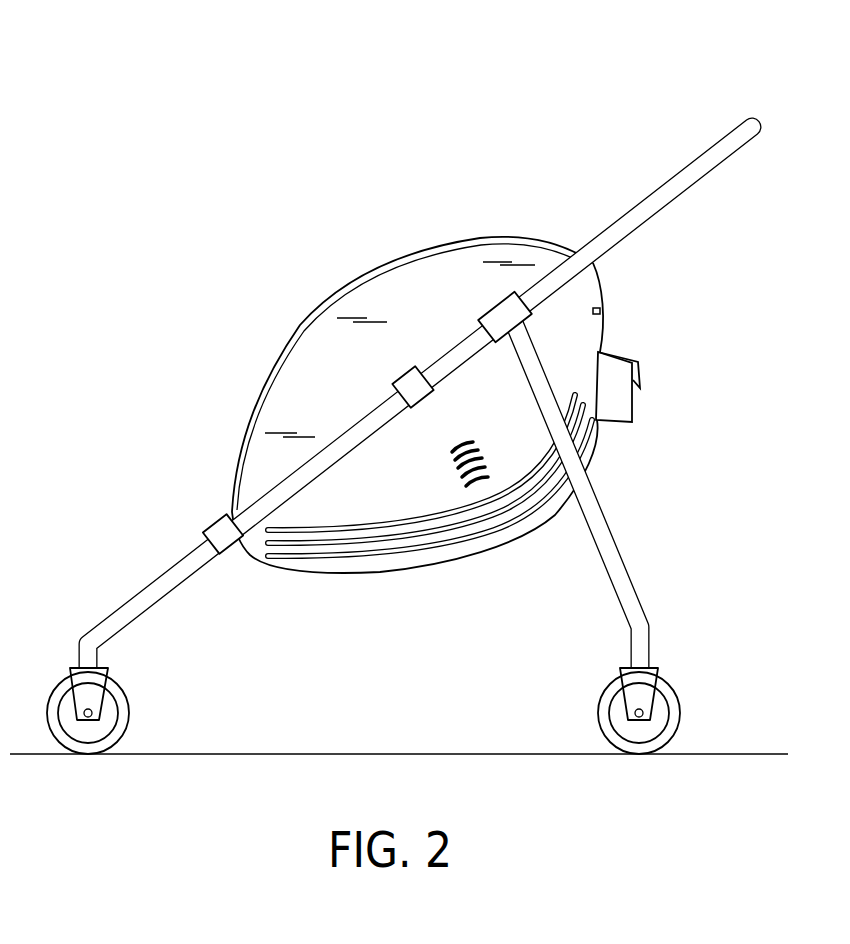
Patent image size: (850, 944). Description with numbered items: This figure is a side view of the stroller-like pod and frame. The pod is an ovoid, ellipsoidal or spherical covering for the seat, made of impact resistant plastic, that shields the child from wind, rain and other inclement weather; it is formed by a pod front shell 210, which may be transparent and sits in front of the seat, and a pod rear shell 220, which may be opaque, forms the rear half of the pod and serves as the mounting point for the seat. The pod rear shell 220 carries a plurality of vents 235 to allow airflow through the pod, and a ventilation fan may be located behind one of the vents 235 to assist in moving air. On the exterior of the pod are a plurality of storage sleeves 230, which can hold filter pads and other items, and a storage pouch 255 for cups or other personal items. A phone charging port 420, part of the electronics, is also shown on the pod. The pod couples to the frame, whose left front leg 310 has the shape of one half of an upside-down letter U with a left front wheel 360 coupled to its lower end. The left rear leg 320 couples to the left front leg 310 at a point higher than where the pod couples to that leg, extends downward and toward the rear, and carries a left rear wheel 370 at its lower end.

The pod front shell 210 is at (352, 285).
The pod rear shell 220 is at (582, 303).
The storage sleeves 230 is at (412, 553).
The vents 235 is at (480, 477).
The storage pouch 255 is at (627, 397).
The left front leg 310 is at (148, 595).
The left rear leg 320 is at (607, 552).
The left front wheel 360 is at (130, 723).
The left rear wheel 370 is at (677, 720).
The phone charging port 420 is at (603, 313).